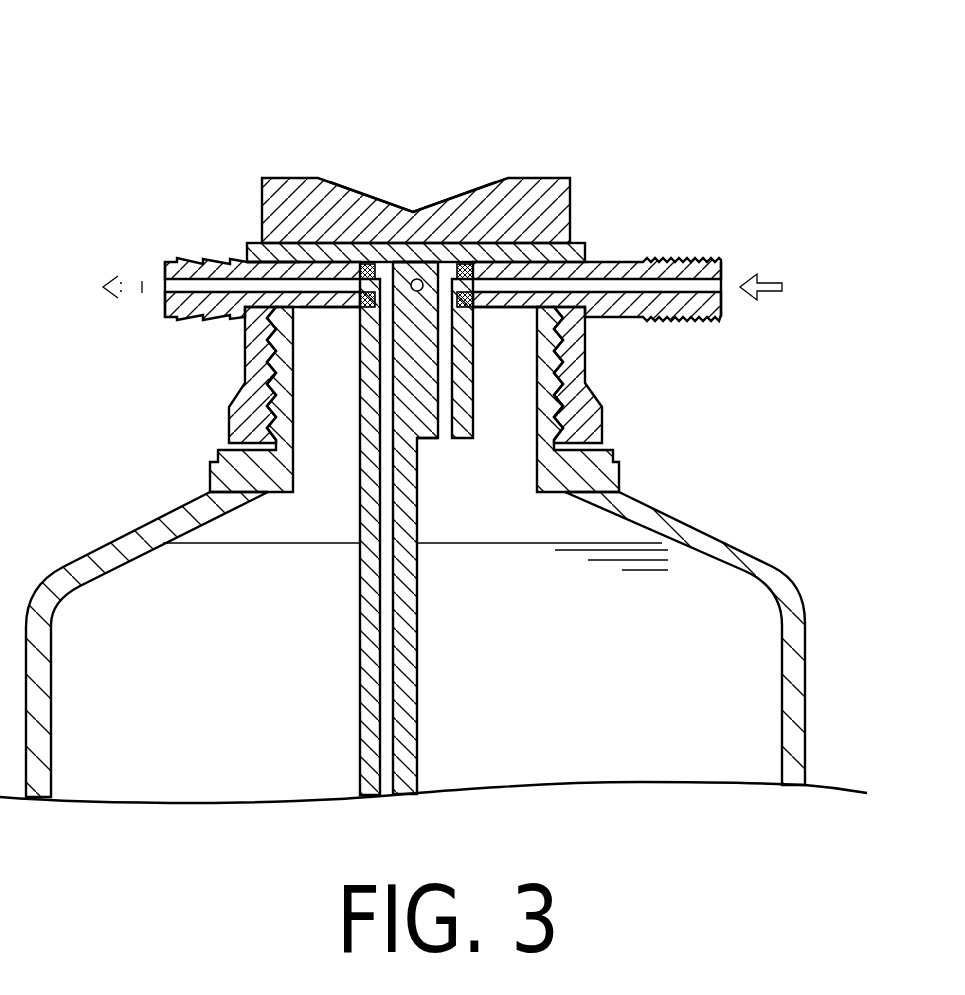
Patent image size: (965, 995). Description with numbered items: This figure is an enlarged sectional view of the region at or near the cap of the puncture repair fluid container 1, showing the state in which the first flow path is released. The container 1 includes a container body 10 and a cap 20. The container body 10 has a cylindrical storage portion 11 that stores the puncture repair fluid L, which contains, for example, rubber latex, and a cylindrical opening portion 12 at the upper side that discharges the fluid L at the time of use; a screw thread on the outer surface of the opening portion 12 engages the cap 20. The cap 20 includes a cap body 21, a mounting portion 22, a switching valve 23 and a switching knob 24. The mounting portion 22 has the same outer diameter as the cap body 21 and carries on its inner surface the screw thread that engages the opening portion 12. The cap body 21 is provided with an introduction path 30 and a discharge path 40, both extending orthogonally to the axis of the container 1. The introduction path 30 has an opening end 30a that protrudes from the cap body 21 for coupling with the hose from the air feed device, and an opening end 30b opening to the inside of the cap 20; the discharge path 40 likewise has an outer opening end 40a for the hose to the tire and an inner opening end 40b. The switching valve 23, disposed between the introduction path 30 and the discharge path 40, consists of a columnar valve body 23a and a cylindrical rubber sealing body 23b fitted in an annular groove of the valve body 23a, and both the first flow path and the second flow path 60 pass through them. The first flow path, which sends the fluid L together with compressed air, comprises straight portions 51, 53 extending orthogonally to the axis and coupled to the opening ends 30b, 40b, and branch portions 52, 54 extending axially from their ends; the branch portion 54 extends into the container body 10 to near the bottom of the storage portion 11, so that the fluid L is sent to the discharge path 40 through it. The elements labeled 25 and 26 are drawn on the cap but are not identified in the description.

The puncture repair fluid container 1 is at (268, 123).
The container body 10 is at (779, 566).
The storage portion 11 is at (800, 725).
The opening portion 12 is at (278, 423).
The cap 20 is at (244, 348).
The cap body 21 is at (221, 262).
The mounting portion 22 is at (586, 425).
The switching valve 23 is at (465, 442).
The valve body 23a is at (400, 262).
The sealing body 23b is at (356, 259).
The switching knob 24 is at (528, 177).
The plate portion 25 is at (583, 243).
The recess 26 is at (533, 188).
The introduction path 30 is at (690, 287).
The opening end 30a is at (708, 275).
The opening end 30b is at (482, 320).
The discharge path 40 is at (165, 305).
The opening end 40a is at (180, 273).
The opening end 40b is at (340, 322).
The straight portion 51 is at (466, 262).
The branch portion 52 is at (445, 420).
The straight portion 53 is at (366, 262).
The branch portion 54 is at (390, 420).
The second flow path 60 is at (420, 279).
The puncture repair fluid L is at (733, 657).